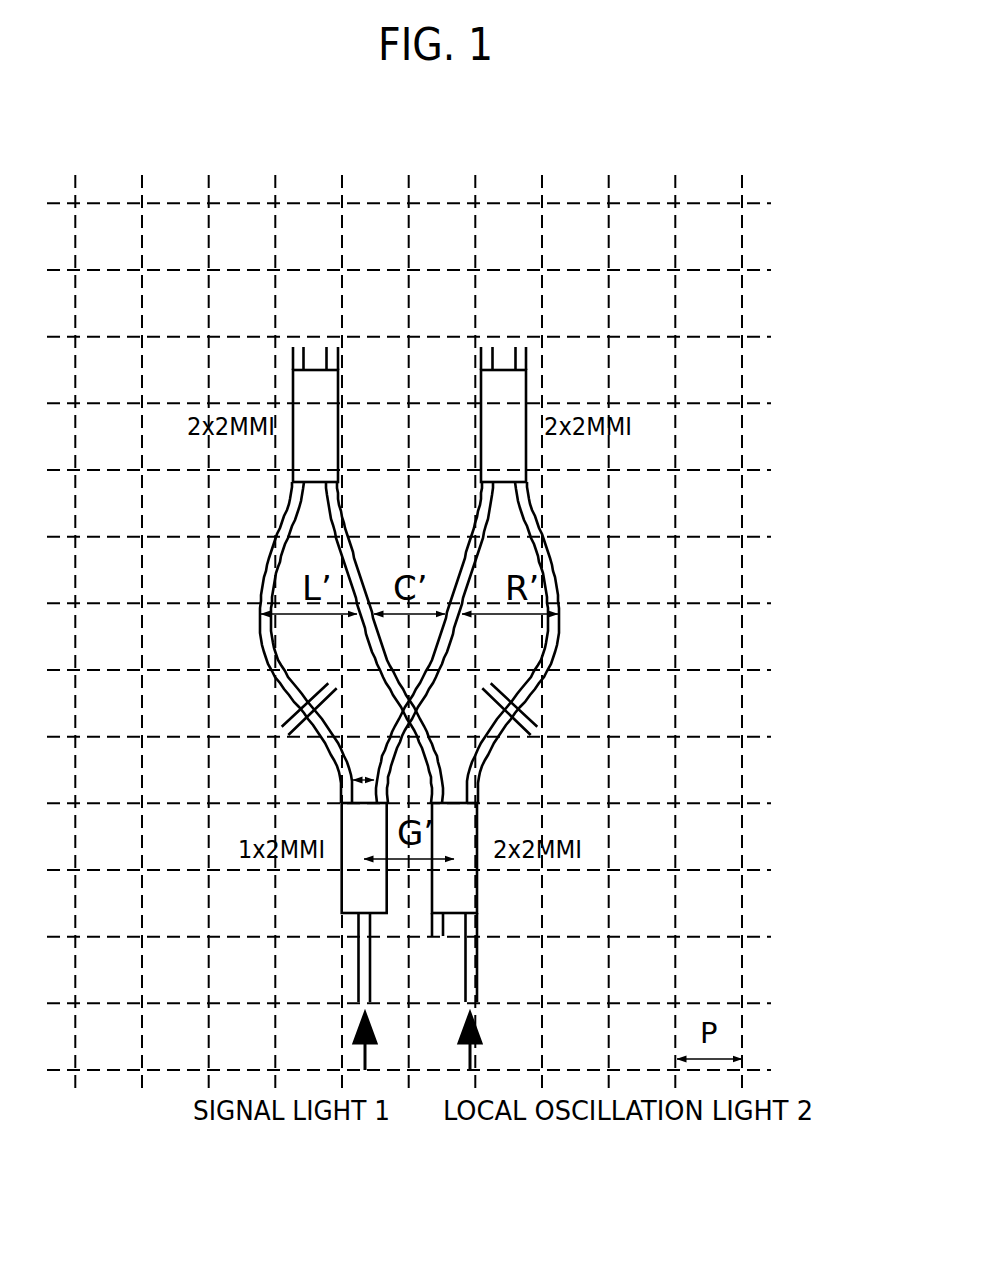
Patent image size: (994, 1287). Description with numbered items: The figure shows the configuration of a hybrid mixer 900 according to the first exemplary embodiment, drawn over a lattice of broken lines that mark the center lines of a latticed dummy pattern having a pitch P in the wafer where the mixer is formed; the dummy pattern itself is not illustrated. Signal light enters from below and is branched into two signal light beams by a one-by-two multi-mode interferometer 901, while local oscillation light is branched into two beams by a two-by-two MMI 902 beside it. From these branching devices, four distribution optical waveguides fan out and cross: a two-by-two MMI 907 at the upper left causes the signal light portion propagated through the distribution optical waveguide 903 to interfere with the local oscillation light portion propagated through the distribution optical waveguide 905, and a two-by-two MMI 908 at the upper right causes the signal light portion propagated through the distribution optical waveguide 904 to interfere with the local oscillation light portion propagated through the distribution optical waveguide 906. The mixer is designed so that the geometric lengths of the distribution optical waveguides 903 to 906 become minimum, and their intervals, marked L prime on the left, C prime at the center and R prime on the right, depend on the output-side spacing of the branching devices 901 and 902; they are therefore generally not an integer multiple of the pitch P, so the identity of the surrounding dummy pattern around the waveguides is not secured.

The hybrid mixer 900 is at (658, 126).
The 1×2 multi-mode interferometer 901 is at (340, 905).
The 2×2 multi-mode interferometer 902 is at (478, 905).
The distribution optical waveguide 903 is at (283, 690).
The distribution optical waveguide 904 is at (453, 660).
The distribution optical waveguide 905 is at (366, 660).
The distribution optical waveguide 906 is at (536, 690).
The 2×2 multi-mode interferometer 907 is at (340, 379).
The 2×2 multi-mode interferometer 908 is at (479, 379).